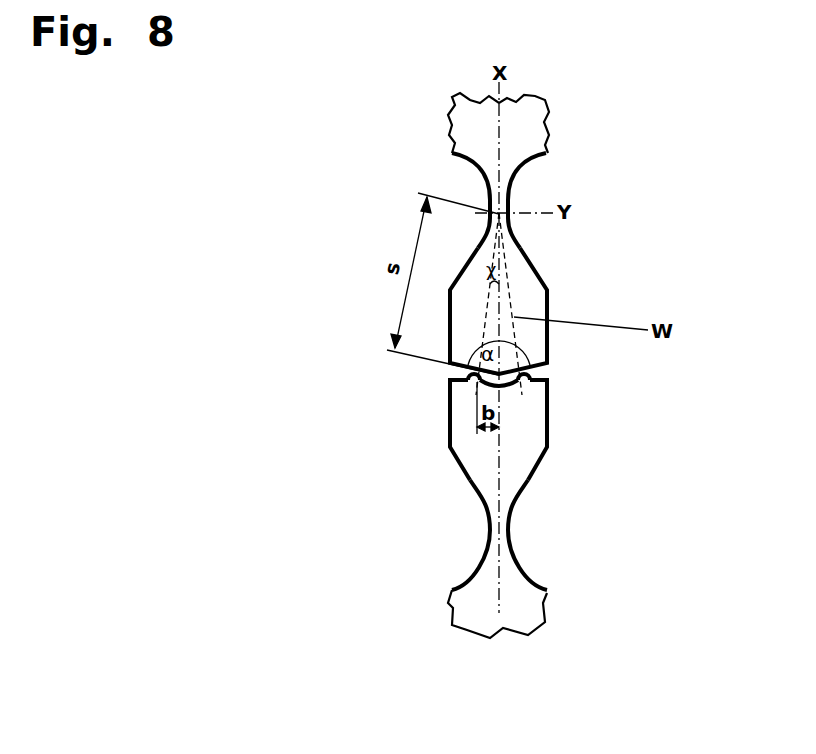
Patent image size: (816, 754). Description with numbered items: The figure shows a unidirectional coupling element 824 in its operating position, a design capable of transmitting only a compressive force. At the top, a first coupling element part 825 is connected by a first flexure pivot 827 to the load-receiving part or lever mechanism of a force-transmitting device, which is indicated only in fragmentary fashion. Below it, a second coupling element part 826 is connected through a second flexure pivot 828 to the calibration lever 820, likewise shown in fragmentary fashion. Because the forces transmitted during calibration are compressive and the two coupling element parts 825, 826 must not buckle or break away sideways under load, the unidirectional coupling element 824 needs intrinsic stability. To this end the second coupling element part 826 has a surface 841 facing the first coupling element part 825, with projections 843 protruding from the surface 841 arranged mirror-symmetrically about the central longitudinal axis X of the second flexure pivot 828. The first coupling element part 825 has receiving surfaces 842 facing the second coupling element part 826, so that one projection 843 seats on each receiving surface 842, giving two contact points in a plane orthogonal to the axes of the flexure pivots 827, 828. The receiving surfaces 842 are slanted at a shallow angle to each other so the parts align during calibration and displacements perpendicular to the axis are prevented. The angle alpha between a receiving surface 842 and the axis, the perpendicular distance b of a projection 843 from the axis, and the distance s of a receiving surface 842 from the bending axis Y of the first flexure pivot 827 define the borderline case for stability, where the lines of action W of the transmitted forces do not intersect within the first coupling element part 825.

The unidirectional coupling element 824 is at (495, 233).
The first coupling element part 825 is at (532, 300).
The second coupling element part 826 is at (495, 442).
The first flexure pivot 827 is at (508, 200).
The second flexure pivot 828 is at (497, 542).
The calibration lever 820 is at (480, 605).
The surface 841 is at (466, 372).
The receiving surfaces 842 is at (536, 371).
The projections 843 is at (474, 381).